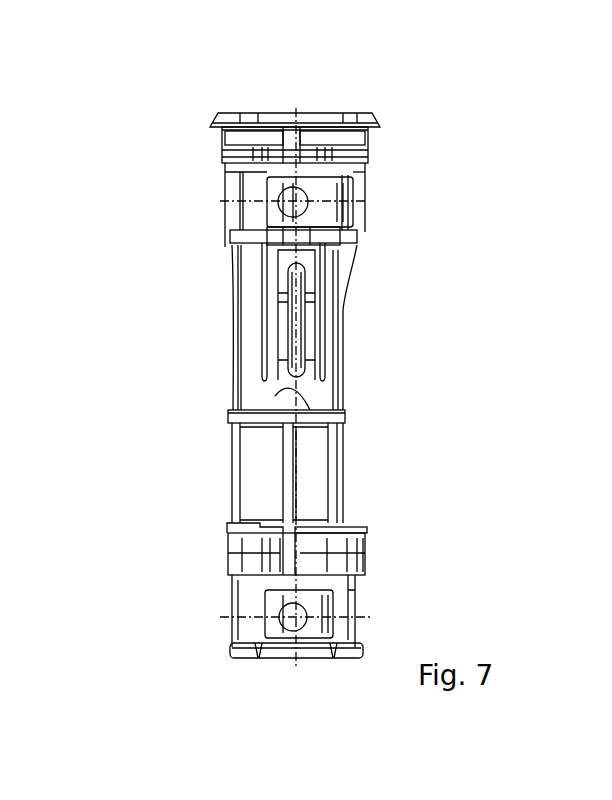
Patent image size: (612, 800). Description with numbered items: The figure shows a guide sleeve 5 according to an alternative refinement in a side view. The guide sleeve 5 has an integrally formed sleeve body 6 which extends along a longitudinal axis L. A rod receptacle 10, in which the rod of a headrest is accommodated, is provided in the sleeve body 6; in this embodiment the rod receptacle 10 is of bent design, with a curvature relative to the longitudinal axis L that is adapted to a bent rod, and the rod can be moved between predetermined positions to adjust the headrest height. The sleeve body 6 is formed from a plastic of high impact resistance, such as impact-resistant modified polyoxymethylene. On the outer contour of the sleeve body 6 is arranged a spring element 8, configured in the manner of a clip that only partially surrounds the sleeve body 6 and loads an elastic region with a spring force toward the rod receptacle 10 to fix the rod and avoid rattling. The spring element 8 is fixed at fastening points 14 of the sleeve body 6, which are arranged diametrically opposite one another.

The rod receptacle 10 is at (322, 96).
The guide sleeve 5 is at (153, 179).
The fastening point 14 is at (270, 204).
The spring element 8 is at (330, 215).
The sleeve body 6 is at (248, 307).
The longitudinal axis L is at (297, 473).